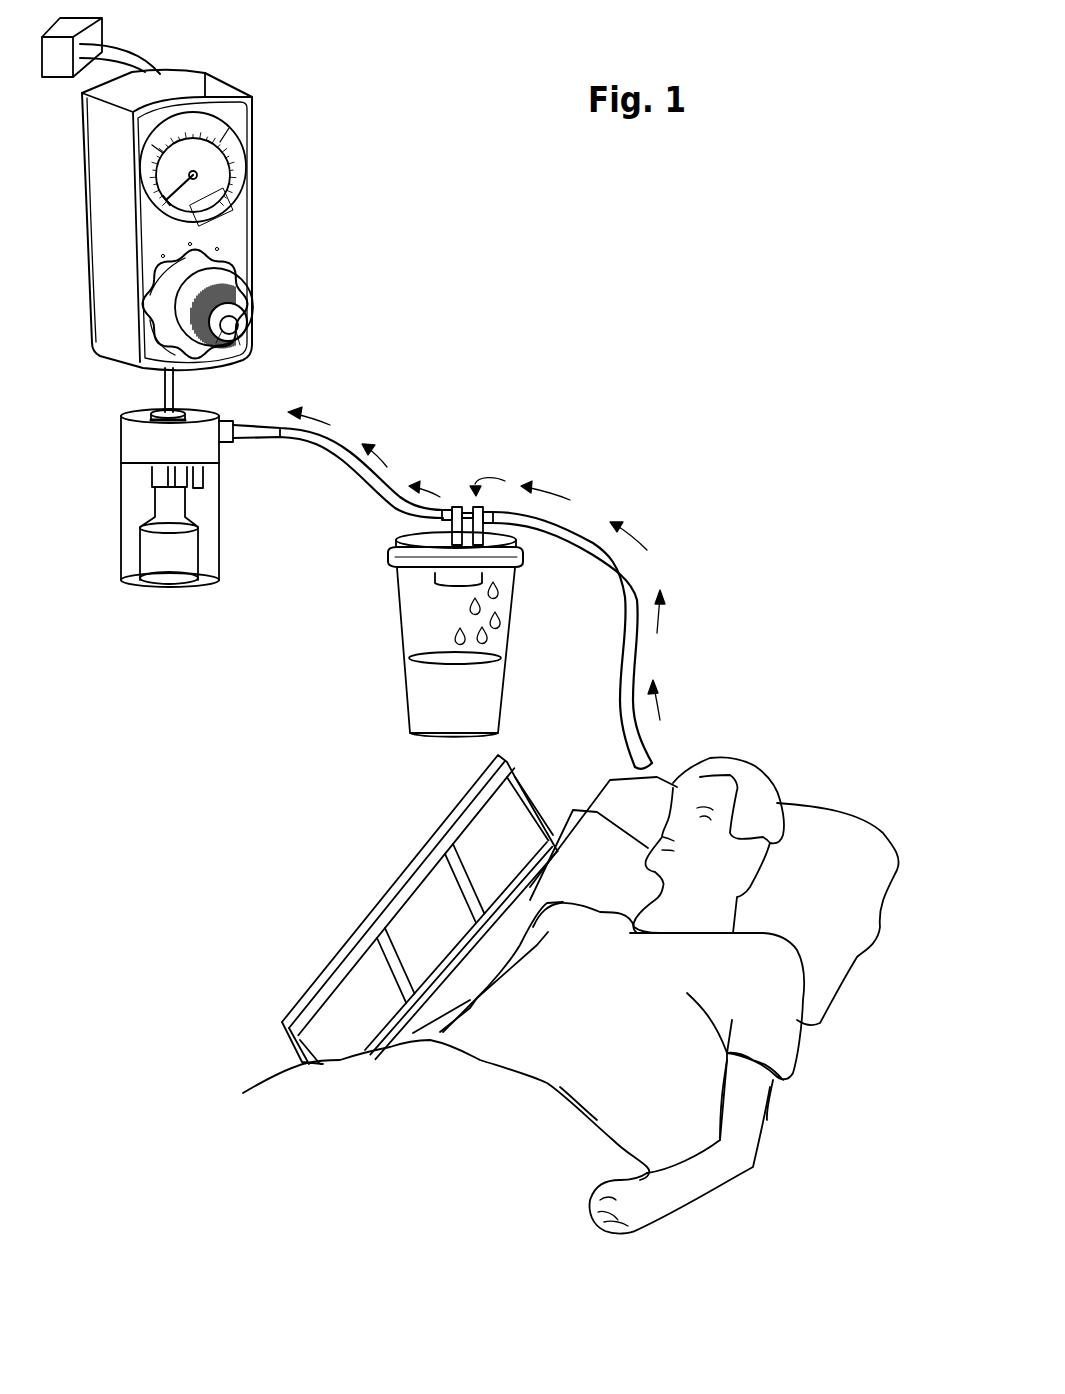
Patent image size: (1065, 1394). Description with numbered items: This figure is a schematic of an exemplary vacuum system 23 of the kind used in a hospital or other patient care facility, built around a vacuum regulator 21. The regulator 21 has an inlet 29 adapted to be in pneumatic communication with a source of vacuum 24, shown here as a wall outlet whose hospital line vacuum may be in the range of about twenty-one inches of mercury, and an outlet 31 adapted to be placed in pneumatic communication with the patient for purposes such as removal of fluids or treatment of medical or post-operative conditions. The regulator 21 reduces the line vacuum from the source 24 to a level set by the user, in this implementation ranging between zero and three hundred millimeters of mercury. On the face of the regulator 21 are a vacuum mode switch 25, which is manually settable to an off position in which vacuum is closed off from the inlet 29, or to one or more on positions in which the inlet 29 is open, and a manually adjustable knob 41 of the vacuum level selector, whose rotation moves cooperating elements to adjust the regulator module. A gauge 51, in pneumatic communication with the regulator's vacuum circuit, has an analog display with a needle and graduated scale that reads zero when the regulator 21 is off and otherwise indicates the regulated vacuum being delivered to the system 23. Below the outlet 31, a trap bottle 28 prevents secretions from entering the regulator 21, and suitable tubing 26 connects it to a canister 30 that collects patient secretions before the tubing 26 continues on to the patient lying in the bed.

The vacuum regulator 21 is at (230, 77).
The vacuum system 23 is at (79, 288).
The source of vacuum 24 is at (82, 45).
The vacuum mode switch 25 is at (207, 258).
The tubing 26 is at (345, 466).
The trap bottle 28 is at (140, 537).
The inlet 29 is at (83, 180).
The canister 30 is at (397, 632).
The outlet 31 is at (163, 393).
The manually adjustable knob 41 is at (245, 314).
The gauge 51 is at (212, 126).